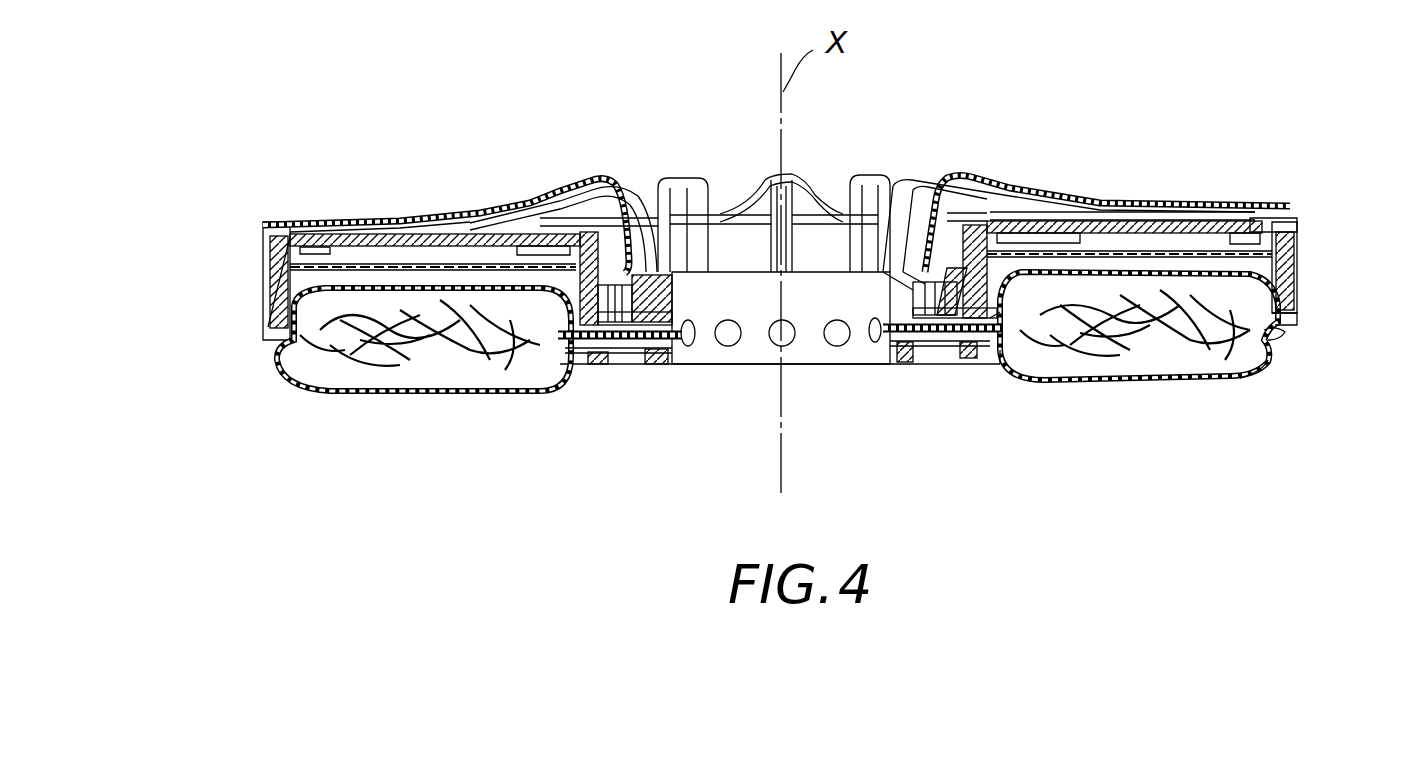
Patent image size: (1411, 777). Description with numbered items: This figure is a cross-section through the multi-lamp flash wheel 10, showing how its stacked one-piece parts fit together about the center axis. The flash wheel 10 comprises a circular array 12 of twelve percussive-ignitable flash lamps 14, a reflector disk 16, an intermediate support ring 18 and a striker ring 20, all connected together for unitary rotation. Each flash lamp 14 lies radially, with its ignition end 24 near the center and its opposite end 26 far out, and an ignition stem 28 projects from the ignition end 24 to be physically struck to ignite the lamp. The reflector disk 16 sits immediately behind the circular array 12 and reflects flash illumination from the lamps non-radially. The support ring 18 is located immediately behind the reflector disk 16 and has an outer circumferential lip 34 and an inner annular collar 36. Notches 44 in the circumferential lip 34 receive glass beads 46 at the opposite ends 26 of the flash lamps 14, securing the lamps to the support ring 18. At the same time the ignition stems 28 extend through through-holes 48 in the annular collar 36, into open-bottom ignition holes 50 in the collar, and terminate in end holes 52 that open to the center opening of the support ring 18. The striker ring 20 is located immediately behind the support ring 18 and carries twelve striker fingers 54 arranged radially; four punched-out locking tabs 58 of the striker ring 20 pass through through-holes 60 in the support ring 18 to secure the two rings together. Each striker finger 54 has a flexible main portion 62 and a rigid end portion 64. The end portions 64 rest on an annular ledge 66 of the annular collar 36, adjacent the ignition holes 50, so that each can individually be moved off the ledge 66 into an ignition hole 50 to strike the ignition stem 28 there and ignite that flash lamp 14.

The multi-lamp flash wheel 10 is at (212, 337).
The circular array 12 is at (273, 391).
The flash lamps 14 is at (337, 397).
The reflector disk 16 is at (405, 262).
The intermediate support ring 18 is at (246, 293).
The striker ring 20 is at (262, 219).
The ignition end 24 is at (990, 367).
The opposite end 26 is at (1265, 356).
The ignition stem 28 is at (903, 365).
The outer circumferential lip 34 is at (1297, 255).
The inner annular collar 36 is at (987, 227).
The notches 44 is at (1297, 312).
The glass beads 46 is at (1285, 333).
The through-holes 48 is at (1010, 380).
The ignition holes 50 is at (657, 193).
The end holes 52 is at (730, 346).
The striker fingers 54 is at (510, 200).
The locking tabs 58 is at (262, 263).
The through-holes 60 is at (337, 233).
The flexible main portion 62 is at (683, 177).
The rigid end portion 64 is at (733, 193).
The annular ledge 66 is at (692, 293).